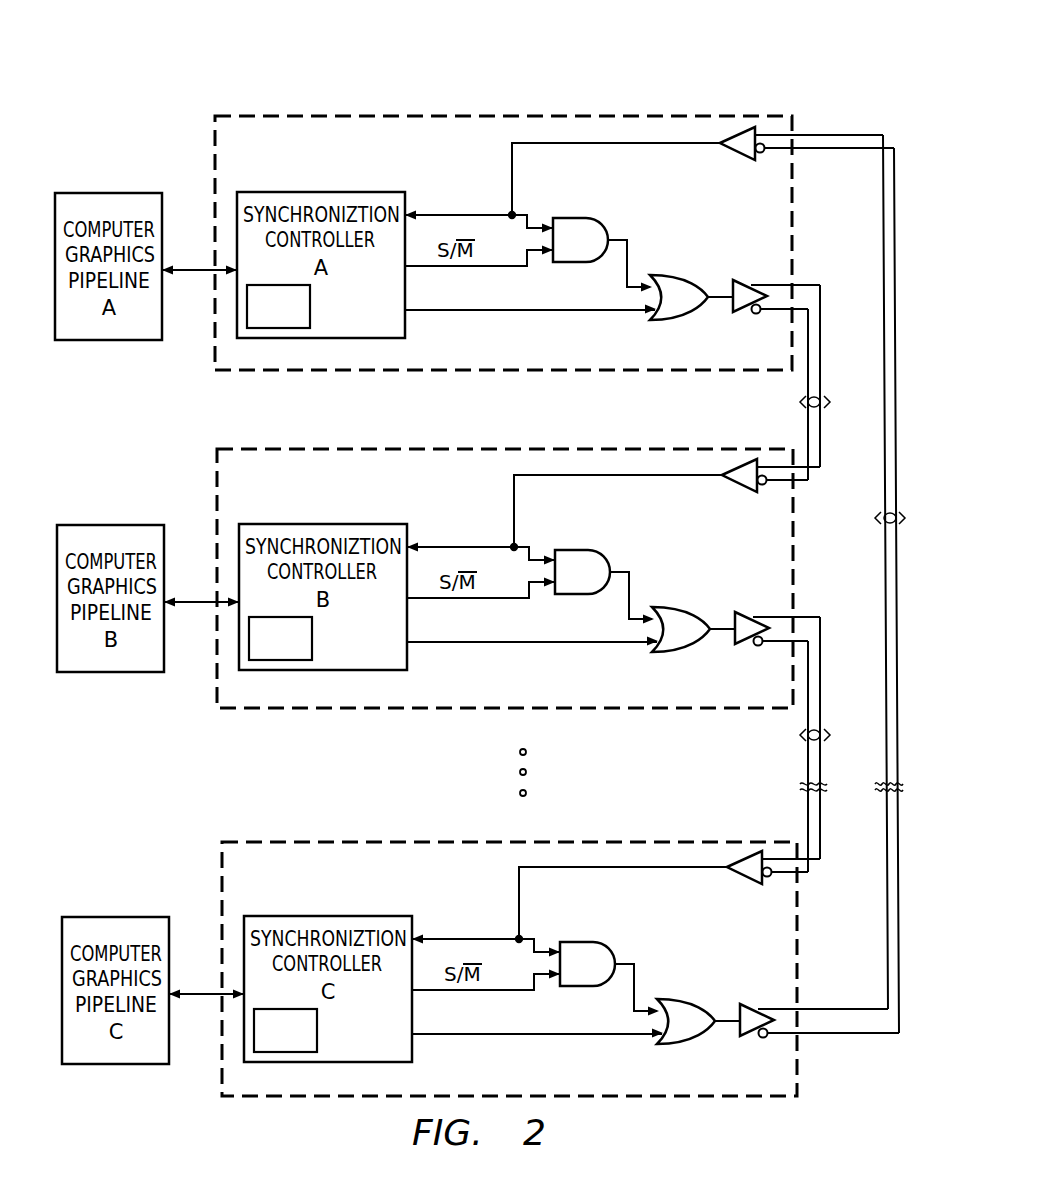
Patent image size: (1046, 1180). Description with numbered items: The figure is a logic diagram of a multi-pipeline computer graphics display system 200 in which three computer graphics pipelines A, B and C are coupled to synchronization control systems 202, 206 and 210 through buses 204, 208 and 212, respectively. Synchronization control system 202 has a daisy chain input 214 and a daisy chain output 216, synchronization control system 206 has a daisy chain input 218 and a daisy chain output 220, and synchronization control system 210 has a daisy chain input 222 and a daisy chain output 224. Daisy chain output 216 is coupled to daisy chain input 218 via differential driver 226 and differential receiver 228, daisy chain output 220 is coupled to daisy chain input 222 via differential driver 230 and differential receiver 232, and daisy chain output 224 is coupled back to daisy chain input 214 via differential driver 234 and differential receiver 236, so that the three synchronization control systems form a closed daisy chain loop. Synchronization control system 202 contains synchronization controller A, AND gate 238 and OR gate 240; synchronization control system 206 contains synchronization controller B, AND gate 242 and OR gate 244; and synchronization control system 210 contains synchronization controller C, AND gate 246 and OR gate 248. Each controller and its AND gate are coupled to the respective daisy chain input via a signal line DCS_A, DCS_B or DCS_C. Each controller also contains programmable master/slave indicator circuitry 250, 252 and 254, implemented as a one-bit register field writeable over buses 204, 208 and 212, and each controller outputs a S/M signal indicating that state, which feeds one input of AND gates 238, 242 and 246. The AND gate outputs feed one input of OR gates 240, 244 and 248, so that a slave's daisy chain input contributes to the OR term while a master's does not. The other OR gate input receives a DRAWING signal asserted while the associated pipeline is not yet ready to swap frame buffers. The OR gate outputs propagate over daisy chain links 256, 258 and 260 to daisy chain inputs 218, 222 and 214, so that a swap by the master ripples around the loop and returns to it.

The multi-pipeline computer graphics display system 200 is at (710, 68).
The synchronization control system 202 is at (278, 116).
The bus 204 is at (196, 268).
The synchronization control system 206 is at (281, 449).
The bus 208 is at (201, 579).
The synchronization control system 210 is at (285, 842).
The bus 212 is at (206, 971).
The daisy chain input 214 is at (511, 163).
The daisy chain output 216 is at (718, 298).
The daisy chain input 218 is at (564, 511).
The daisy chain output 220 is at (732, 656).
The daisy chain input 222 is at (569, 903).
The daisy chain output 224 is at (737, 1048).
The differential driver 226 is at (742, 280).
The differential receiver 228 is at (752, 492).
The differential driver 230 is at (777, 606).
The differential receiver 232 is at (755, 884).
The differential driver 234 is at (819, 998).
The differential receiver 236 is at (735, 153).
The AND gate 238 is at (578, 217).
The OR gate 240 is at (673, 272).
The AND gate 242 is at (530, 563).
The OR gate 244 is at (561, 604).
The AND gate 246 is at (535, 955).
The OR gate 248 is at (566, 996).
The programmable master/slave indicator circuitry 250 is at (310, 306).
The programmable master/slave indicator circuitry 252 is at (316, 640).
The programmable master/slave indicator circuitry 254 is at (321, 1032).
The daisy chain link 256 is at (799, 402).
The daisy chain link 258 is at (799, 735).
The daisy chain link 260 is at (874, 520).